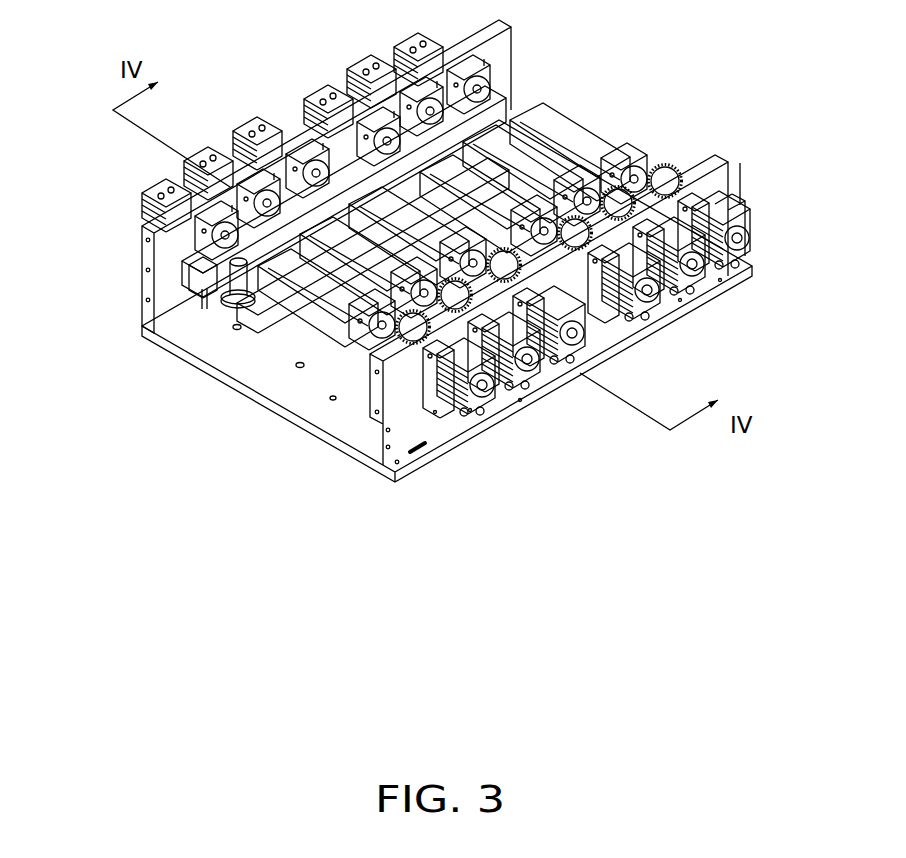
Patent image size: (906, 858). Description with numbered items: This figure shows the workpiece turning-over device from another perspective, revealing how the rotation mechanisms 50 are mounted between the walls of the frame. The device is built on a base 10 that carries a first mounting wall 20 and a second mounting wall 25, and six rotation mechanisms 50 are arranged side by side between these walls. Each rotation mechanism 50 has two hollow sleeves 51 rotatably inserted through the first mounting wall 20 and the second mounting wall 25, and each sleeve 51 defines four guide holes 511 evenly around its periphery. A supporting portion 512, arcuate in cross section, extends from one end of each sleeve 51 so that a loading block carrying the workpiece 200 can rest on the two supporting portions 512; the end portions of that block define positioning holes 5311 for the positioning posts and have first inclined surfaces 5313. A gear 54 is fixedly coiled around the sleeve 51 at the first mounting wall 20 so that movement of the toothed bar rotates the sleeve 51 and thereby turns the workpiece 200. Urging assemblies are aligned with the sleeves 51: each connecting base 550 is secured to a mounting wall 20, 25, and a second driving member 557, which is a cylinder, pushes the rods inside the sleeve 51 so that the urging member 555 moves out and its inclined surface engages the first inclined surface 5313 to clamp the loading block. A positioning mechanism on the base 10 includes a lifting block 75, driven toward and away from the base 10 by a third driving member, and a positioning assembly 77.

The base 10 is at (353, 453).
The first mounting wall 20 is at (400, 453).
The second mounting wall 25 is at (146, 290).
The rotation mechanism 50 is at (432, 225).
The hollow sleeve 51 is at (395, 128).
The guide hole 511 is at (303, 167).
The supporting portion 512 is at (233, 263).
The positioning hole 5311 is at (160, 210).
The first inclined surface 5313 is at (610, 183).
The gear 54 is at (560, 290).
The connecting base 550 is at (710, 188).
The urging member 555 is at (233, 233).
The second driving member 557 is at (747, 217).
The lifting block 75 is at (197, 265).
The positioning assembly 77 is at (220, 262).
The workpiece 200 is at (303, 313).